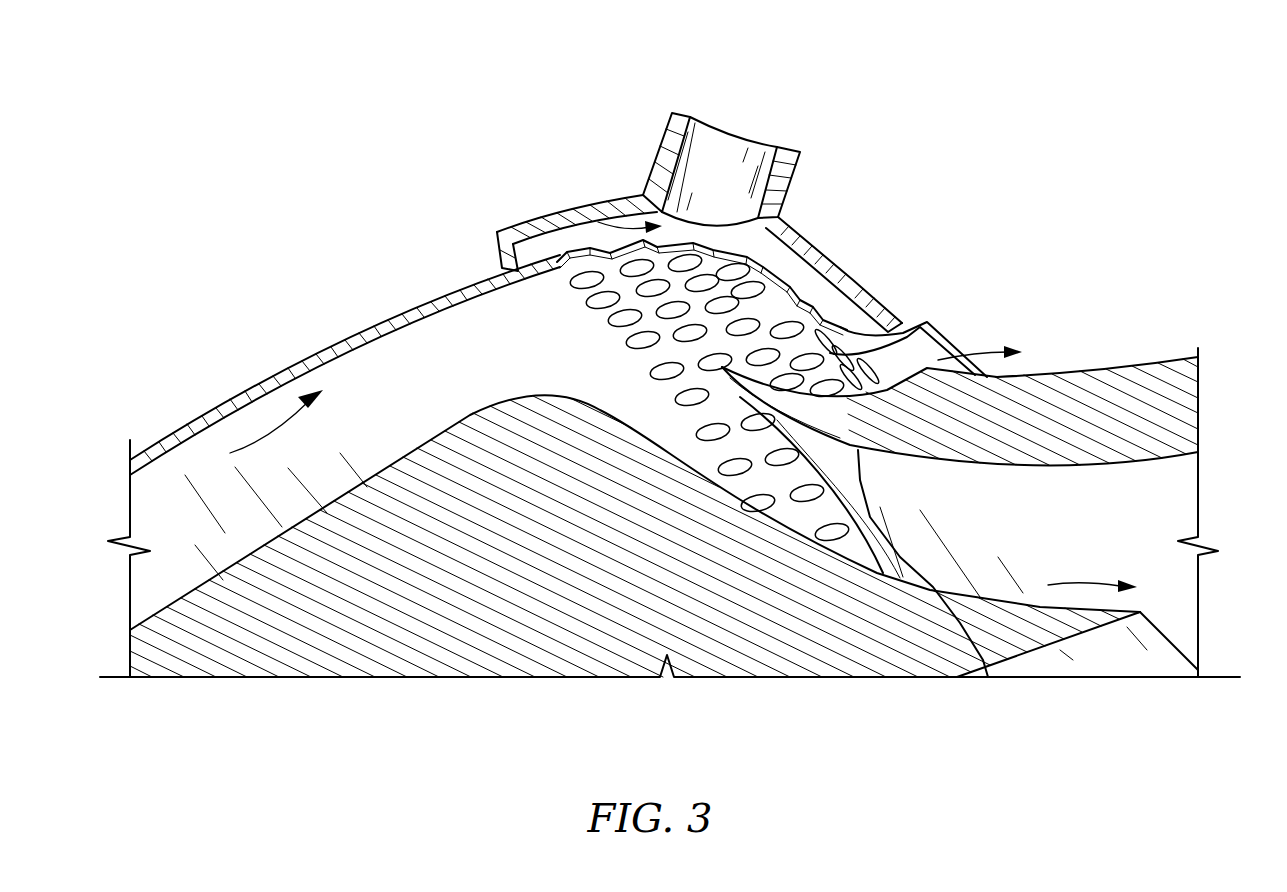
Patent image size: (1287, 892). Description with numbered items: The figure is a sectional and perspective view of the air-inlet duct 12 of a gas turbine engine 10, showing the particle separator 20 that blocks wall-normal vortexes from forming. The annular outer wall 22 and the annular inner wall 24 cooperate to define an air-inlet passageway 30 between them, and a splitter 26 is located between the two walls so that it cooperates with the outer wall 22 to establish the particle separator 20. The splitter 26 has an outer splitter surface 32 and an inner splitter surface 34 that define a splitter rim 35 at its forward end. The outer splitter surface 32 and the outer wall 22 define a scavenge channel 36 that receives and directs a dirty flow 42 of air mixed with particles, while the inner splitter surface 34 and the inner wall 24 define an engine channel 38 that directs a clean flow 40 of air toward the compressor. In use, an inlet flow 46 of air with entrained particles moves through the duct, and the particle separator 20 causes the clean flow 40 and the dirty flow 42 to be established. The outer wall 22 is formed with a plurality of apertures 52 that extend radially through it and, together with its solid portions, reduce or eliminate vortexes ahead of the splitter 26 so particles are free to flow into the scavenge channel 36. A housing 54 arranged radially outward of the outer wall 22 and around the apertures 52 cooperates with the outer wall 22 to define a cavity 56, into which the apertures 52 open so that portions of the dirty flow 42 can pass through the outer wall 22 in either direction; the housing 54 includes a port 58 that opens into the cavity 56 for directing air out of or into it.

The gas turbine engine 10 is at (950, 158).
The air-inlet duct 12 is at (985, 212).
The particle separator 20 is at (905, 300).
The outer wall 22 is at (188, 433).
The inner wall 24 is at (397, 462).
The splitter 26 is at (1080, 418).
The air-inlet passageway 30 is at (165, 513).
The outer splitter surface 32 is at (935, 322).
The inner splitter surface 34 is at (988, 677).
The splitter rim 35 is at (732, 402).
The scavenge channel 36 is at (843, 367).
The engine channel 38 is at (1040, 508).
The clean flow 40 is at (1083, 593).
The dirty flow 42 is at (993, 358).
The inlet flow 46 is at (257, 430).
The plurality of apertures 52 is at (578, 252).
The housing 54 is at (514, 220).
The cavity 56 is at (630, 226).
The port 58 is at (812, 172).